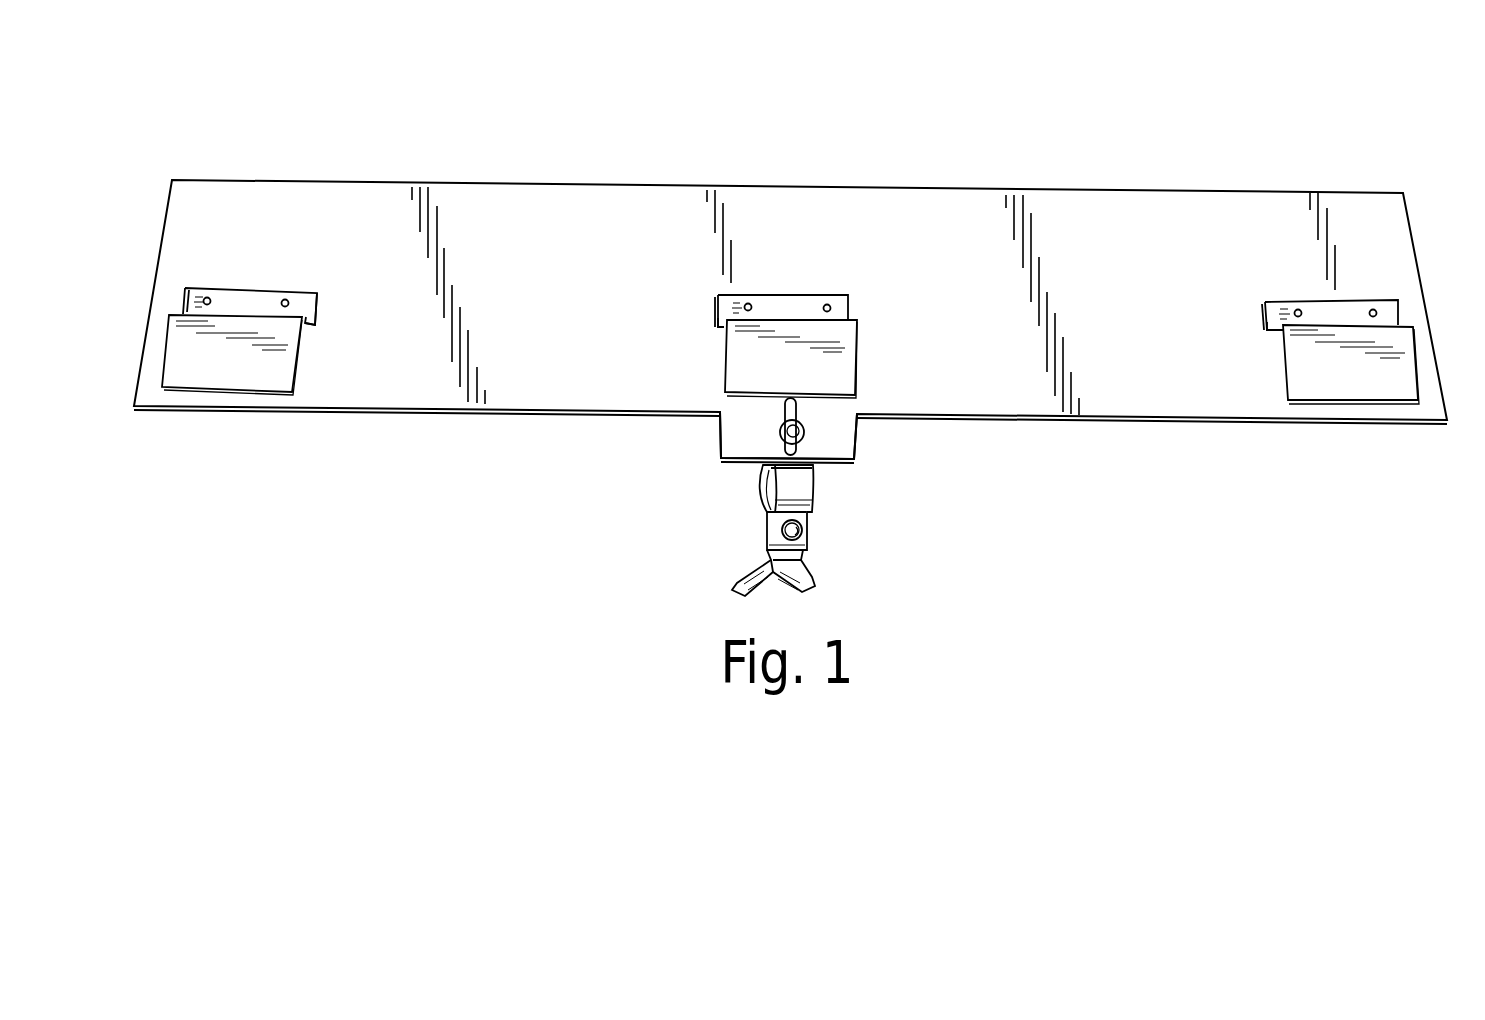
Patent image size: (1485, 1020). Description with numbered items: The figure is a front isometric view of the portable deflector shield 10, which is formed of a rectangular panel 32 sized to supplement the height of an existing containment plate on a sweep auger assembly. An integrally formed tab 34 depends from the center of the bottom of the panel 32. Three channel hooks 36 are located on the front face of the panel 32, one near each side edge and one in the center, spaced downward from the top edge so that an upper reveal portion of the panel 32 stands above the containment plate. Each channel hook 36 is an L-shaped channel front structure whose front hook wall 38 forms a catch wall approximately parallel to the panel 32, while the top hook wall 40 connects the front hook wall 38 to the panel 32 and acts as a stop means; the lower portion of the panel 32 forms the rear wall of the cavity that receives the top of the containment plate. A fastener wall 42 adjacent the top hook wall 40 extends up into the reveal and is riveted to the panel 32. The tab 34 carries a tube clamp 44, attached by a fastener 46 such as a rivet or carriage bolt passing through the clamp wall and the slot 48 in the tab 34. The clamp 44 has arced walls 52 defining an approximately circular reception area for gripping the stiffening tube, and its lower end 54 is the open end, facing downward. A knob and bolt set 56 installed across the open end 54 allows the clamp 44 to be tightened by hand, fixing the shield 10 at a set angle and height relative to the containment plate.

The portable deflector shield 10 is at (215, 153).
The panel 32 is at (473, 198).
The tab 34 is at (718, 445).
The channel hook 36 is at (207, 392).
The front hook wall 38 is at (286, 374).
The top hook wall 40 is at (315, 320).
The fastener wall 42 is at (297, 297).
The tube clamp 44 is at (808, 514).
The fastener 46 is at (806, 436).
The slot 48 is at (810, 408).
The arced walls 52 is at (763, 488).
The lower end 54 is at (768, 530).
The knob and bolt set 56 is at (816, 585).